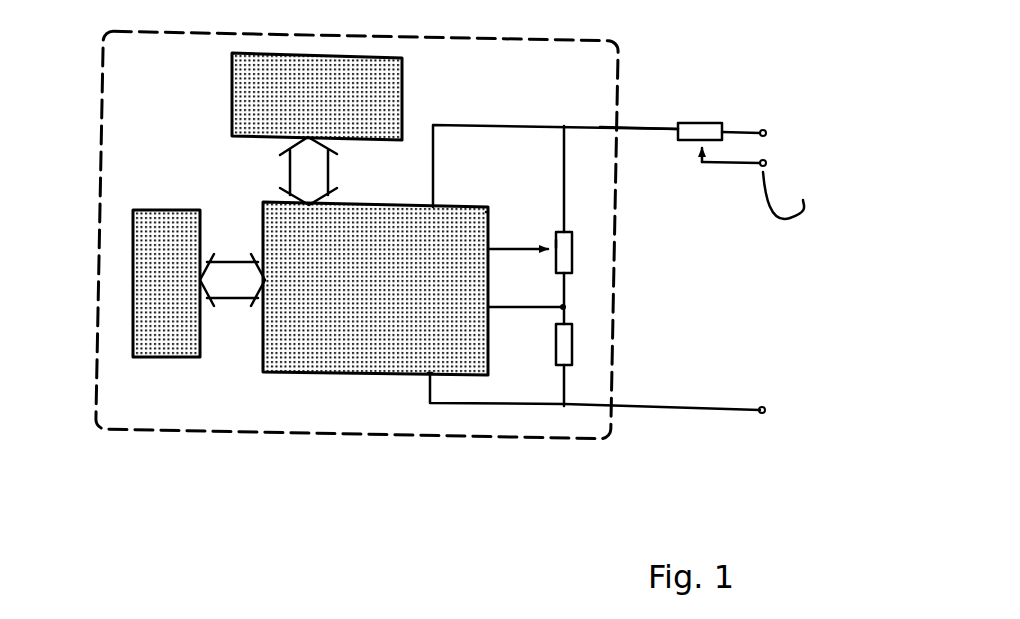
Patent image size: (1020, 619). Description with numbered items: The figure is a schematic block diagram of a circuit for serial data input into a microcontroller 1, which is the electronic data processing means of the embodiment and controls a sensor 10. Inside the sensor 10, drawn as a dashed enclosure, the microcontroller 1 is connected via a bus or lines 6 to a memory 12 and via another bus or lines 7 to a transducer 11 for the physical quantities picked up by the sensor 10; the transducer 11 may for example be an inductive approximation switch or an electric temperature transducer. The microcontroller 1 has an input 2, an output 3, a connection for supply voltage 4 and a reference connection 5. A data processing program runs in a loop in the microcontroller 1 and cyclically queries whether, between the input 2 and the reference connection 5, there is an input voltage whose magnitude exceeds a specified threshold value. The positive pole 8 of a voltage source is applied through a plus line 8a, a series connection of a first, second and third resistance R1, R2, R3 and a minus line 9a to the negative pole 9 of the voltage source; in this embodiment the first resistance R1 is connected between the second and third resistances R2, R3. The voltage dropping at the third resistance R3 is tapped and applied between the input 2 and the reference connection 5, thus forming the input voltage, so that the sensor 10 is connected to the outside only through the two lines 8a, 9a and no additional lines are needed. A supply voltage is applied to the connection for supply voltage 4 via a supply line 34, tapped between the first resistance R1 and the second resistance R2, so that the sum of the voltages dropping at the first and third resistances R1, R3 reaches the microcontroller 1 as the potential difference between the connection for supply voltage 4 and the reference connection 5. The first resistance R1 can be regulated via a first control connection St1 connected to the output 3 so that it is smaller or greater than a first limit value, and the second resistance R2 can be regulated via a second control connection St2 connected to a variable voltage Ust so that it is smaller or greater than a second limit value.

The microcontroller 1 is at (365, 311).
The input 2 is at (511, 311).
The output 3 is at (503, 254).
The connection for supply voltage 4 is at (451, 229).
The reference connection 5 is at (429, 357).
The bus or lines 6 is at (230, 285).
The bus or lines 7 is at (303, 168).
The positive pole 8 is at (772, 87).
The plus line 8a is at (647, 130).
The negative pole 9 is at (760, 398).
The minus line 9a is at (703, 412).
The sensor 10 is at (242, 432).
The transducer 11 is at (253, 90).
The memory 12 is at (165, 237).
The supply line 34 is at (447, 123).
The first resistance R1 is at (580, 252).
The second resistance R2 is at (692, 122).
The third resistance R3 is at (577, 343).
The first control connection St1 is at (552, 242).
The second control connection St2 is at (693, 146).
The variable voltage Ust is at (799, 186).